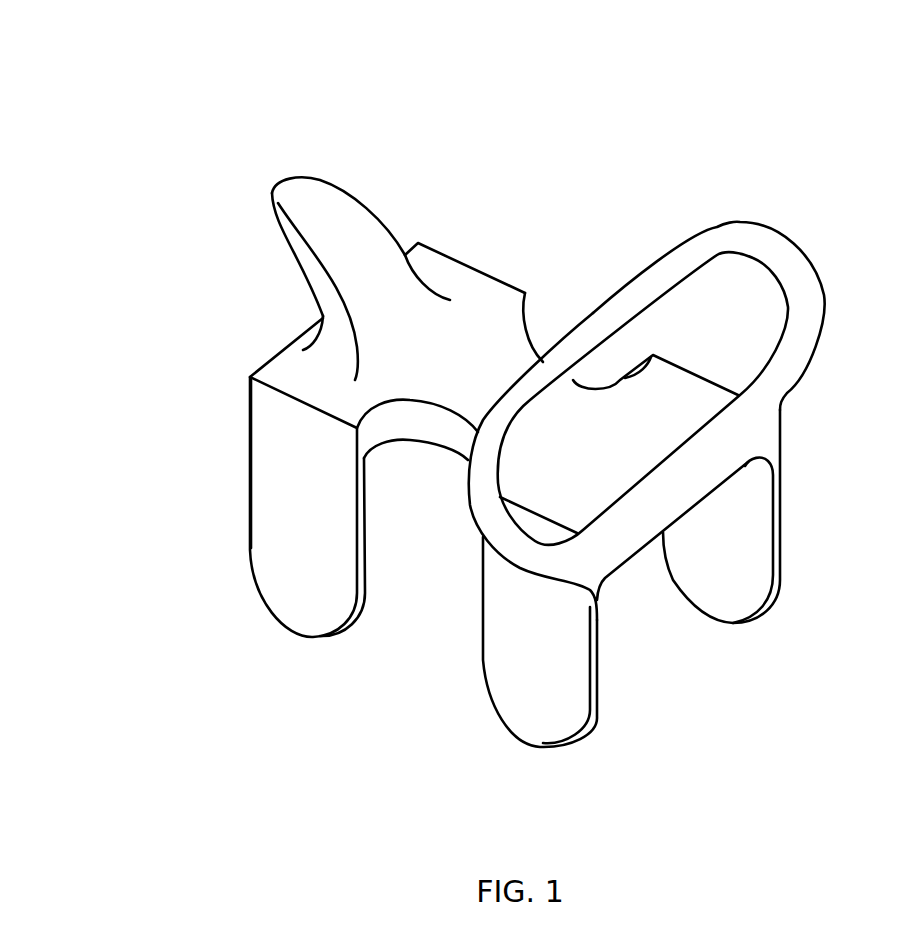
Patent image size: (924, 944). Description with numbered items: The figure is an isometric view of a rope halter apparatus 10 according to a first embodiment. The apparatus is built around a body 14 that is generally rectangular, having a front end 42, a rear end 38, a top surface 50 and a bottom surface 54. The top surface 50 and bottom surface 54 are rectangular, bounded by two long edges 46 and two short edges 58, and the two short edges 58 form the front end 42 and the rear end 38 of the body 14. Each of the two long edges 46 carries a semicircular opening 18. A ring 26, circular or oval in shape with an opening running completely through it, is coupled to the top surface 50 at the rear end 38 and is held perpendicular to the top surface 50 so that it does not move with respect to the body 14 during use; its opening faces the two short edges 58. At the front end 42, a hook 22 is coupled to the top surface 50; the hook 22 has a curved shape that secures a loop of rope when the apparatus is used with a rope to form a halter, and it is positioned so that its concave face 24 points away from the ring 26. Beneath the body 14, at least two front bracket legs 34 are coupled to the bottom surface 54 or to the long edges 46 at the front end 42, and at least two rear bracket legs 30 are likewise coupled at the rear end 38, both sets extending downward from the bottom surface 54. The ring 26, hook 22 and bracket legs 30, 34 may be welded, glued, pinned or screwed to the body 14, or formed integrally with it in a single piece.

The rope halter apparatus 10 is at (657, 116).
The body 14 is at (472, 287).
The semicircular opening 18 is at (412, 417).
The hook 22 is at (303, 188).
The concave face 24 is at (305, 273).
The ring 26 is at (787, 263).
The rear bracket legs 30 is at (750, 520).
The front bracket legs 34 is at (278, 600).
The rear end 38 is at (643, 517).
The front end 42 is at (285, 368).
The long edges 46 is at (270, 413).
The top surface 50 is at (492, 340).
The bottom surface 54 is at (450, 453).
The short edges 58 is at (413, 243).